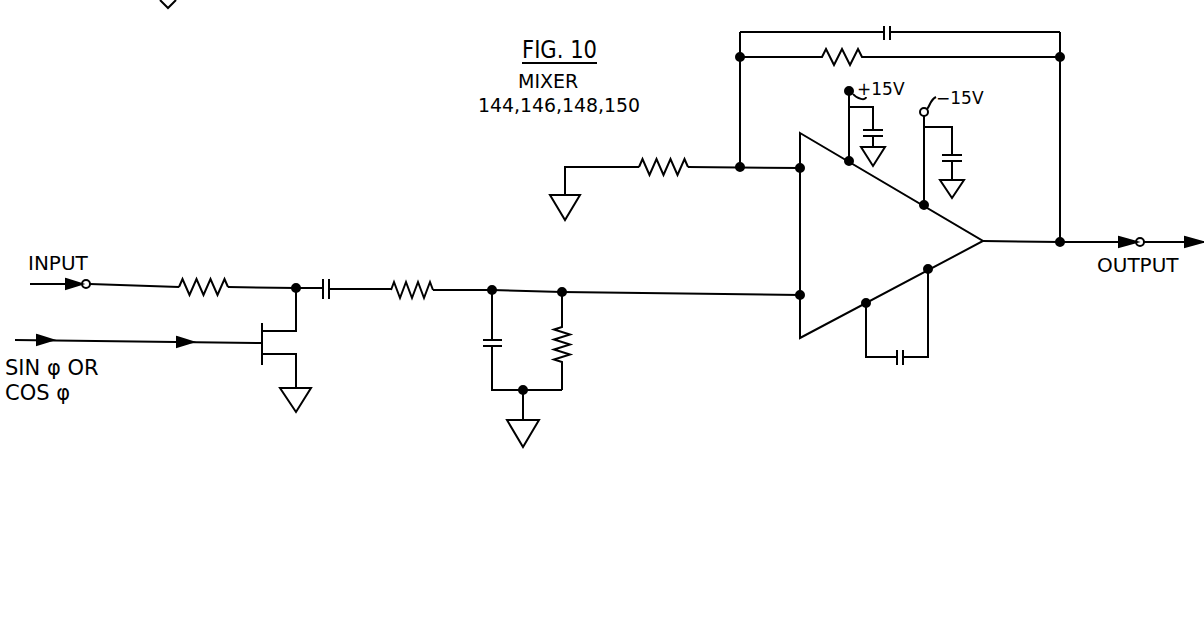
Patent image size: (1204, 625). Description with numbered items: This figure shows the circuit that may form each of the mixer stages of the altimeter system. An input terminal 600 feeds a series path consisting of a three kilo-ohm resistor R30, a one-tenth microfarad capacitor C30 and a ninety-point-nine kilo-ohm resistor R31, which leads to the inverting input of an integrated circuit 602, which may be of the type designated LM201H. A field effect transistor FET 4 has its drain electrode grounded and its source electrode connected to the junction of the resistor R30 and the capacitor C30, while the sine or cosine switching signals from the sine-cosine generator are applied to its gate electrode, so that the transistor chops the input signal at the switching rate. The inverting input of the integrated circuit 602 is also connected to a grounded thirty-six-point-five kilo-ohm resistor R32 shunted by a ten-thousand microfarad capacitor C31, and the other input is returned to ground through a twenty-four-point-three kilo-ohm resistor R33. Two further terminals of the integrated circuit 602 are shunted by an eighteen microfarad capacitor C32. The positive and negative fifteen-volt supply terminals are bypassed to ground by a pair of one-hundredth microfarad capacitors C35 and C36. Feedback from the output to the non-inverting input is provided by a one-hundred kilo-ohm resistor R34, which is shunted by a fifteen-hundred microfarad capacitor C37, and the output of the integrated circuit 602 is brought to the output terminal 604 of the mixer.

The input terminal 600 is at (87, 289).
The integrated circuit 602 is at (809, 327).
The output terminal 604 is at (1141, 238).
The resistor R30 is at (184, 281).
The capacitor C30 is at (324, 278).
The resistor R31 is at (394, 283).
The capacitor C31 is at (489, 346).
The resistor R32 is at (571, 352).
The resistor R33 is at (641, 162).
The resistor R34 is at (838, 66).
The capacitor C32 is at (900, 366).
The capacitor C35 is at (912, 124).
The capacitor C36 is at (998, 153).
The capacitor C37 is at (886, 26).
The field effect transistor 4 is at (258, 354).